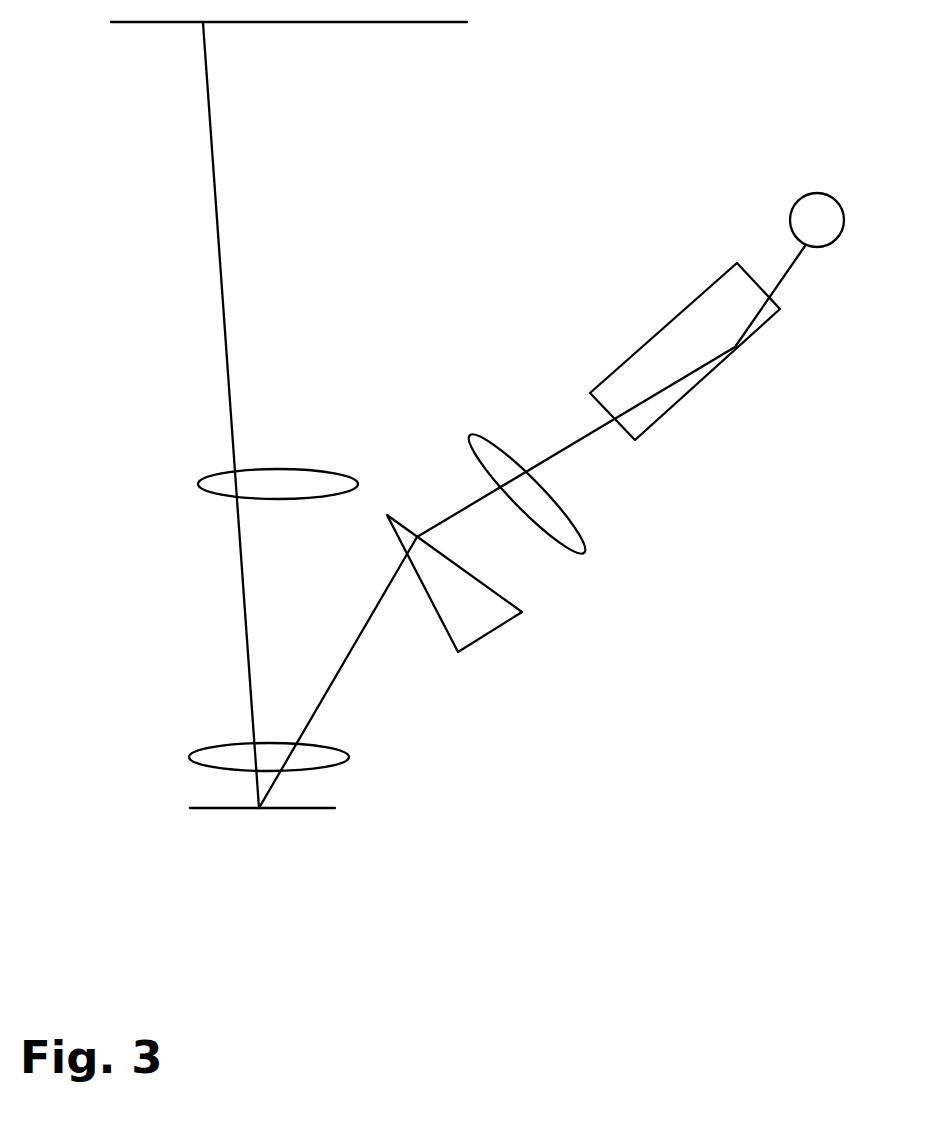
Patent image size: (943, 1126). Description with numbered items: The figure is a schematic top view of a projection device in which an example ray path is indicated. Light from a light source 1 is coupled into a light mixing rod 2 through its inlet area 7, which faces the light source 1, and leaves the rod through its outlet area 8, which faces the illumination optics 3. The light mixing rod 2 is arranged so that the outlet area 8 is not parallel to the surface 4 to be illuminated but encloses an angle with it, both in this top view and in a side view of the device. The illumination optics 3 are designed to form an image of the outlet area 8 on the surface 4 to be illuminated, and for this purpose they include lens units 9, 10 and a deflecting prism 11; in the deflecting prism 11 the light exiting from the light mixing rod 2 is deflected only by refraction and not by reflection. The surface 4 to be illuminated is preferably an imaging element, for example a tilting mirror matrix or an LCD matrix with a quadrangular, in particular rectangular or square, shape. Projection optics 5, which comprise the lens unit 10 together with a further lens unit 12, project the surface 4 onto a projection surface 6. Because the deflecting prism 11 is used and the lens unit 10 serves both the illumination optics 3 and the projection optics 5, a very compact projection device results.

The light source 1 is at (813, 191).
The light mixing rod 2 is at (705, 392).
The illumination optics 3 is at (360, 783).
The surface to be illuminated 4 is at (268, 810).
The projection optics 5 is at (177, 470).
The projection surface 6 is at (142, 23).
The inlet area 7 is at (772, 295).
The outlet area 8 is at (635, 440).
The lens unit 9 is at (484, 433).
The lens unit 10 is at (196, 762).
The deflecting prism 11 is at (395, 520).
The further lens unit 12 is at (198, 478).